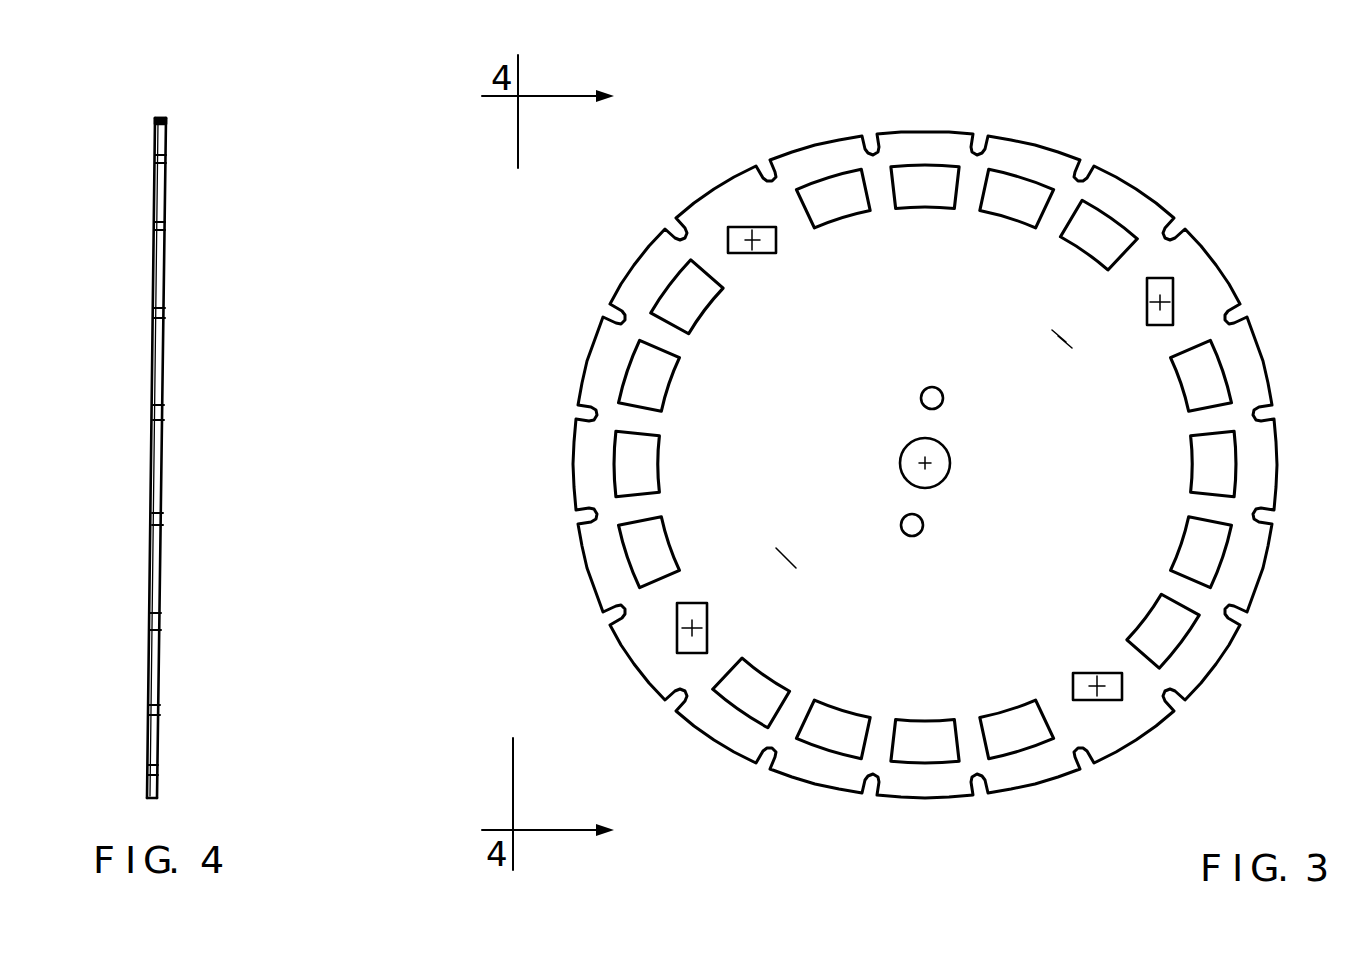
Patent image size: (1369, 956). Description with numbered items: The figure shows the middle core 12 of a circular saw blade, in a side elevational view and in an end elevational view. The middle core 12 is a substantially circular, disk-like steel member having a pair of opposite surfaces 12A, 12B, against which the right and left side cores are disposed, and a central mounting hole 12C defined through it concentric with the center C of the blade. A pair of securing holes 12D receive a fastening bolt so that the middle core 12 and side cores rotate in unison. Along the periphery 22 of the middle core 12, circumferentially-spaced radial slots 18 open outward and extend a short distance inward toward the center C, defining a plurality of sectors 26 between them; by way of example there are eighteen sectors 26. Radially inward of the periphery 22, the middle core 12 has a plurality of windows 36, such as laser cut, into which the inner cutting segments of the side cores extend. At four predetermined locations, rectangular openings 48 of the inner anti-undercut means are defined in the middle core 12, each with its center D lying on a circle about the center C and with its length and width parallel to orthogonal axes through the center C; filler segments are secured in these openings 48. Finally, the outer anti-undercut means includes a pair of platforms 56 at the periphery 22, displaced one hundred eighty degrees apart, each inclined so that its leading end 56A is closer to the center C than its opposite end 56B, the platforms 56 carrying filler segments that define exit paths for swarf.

In FIG. 4, the middle core 12 is at (159, 432).
In FIG. 3, the middle core 12 is at (1190, 155).
In FIG. 4, the opposite surface 12A is at (166, 370).
In FIG. 3, the opposite surface 12A is at (920, 452).
In FIG. 4, the opposite surface 12B is at (155, 382).
In FIG. 3, the central mounting hole 12C is at (946, 463).
In FIG. 3, the securing holes 12D is at (921, 400).
In FIG. 4, the radial slots 18 is at (164, 230).
In FIG. 3, the radial slots 18 is at (762, 153).
In FIG. 3, the periphery 22 is at (920, 452).
In FIG. 4, the sectors 26 is at (160, 580).
In FIG. 3, the sectors 26 is at (920, 452).
In FIG. 3, the windows 36 is at (708, 315).
In FIG. 3, the openings 48 is at (758, 256).
In FIG. 3, the platforms 56 is at (932, 464).
In FIG. 3, the closer end 56A is at (976, 132).
In FIG. 3, the opposite end 56B is at (868, 132).
In FIG. 3, the center C is at (903, 460).
In FIG. 3, the center of the opening D is at (752, 230).